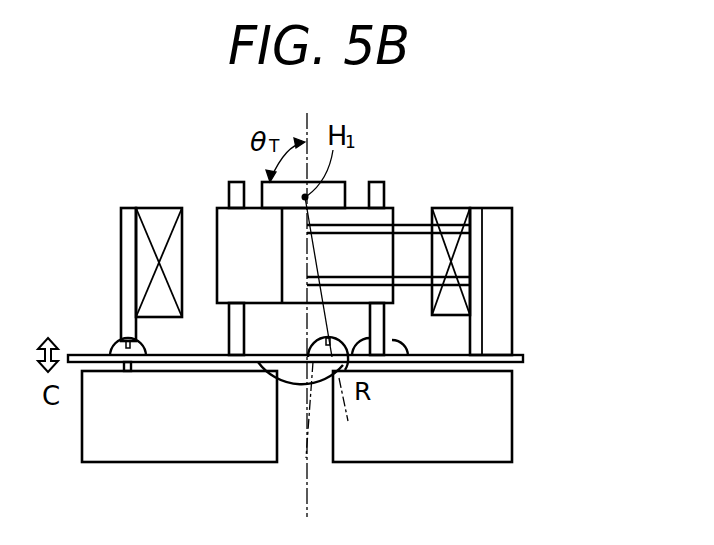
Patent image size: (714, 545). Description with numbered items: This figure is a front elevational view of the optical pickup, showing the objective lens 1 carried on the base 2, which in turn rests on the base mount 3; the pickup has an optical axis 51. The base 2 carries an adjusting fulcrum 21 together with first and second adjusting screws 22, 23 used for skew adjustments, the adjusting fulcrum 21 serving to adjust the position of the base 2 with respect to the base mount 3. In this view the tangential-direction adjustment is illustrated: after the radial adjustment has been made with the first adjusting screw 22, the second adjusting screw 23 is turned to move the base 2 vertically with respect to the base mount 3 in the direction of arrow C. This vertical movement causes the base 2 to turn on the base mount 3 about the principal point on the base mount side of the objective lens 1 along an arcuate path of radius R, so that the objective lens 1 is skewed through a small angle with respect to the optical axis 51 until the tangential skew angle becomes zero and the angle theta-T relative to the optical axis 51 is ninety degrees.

The objective lens 1 is at (336, 182).
The base 2 is at (520, 355).
The base mount 3 is at (512, 432).
The adjusting fulcrum 21 is at (387, 345).
The first adjusting screw 22 is at (322, 362).
The second adjusting screw 23 is at (116, 345).
The optical axis 51 is at (307, 462).